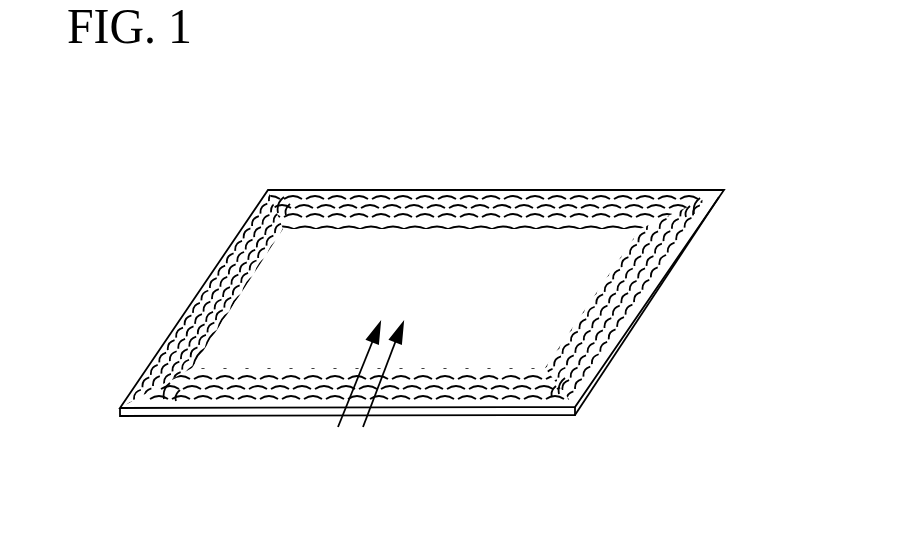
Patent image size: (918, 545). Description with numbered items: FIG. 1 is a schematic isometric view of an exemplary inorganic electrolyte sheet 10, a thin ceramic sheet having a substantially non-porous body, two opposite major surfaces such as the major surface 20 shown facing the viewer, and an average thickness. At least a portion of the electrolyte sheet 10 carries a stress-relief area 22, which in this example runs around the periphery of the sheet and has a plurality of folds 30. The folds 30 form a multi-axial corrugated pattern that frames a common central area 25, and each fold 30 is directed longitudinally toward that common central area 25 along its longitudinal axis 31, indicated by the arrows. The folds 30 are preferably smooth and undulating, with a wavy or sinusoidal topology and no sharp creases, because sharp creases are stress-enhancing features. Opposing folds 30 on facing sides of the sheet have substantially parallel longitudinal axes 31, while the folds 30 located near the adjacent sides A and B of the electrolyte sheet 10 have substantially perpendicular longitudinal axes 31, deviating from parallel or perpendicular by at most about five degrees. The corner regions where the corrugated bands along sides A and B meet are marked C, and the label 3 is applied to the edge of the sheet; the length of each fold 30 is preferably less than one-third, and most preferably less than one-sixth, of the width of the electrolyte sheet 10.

The electrolyte sheet 10 is at (568, 83).
The substrate plate 3 is at (137, 385).
The major surface 20 is at (448, 403).
The stress-relief area 22 is at (441, 209).
The common central area 25 is at (358, 260).
The folds 30 is at (572, 191).
The longitudinal axis 31 is at (342, 427).
The side A is at (355, 192).
The side B is at (240, 243).
The corner region C is at (283, 196).